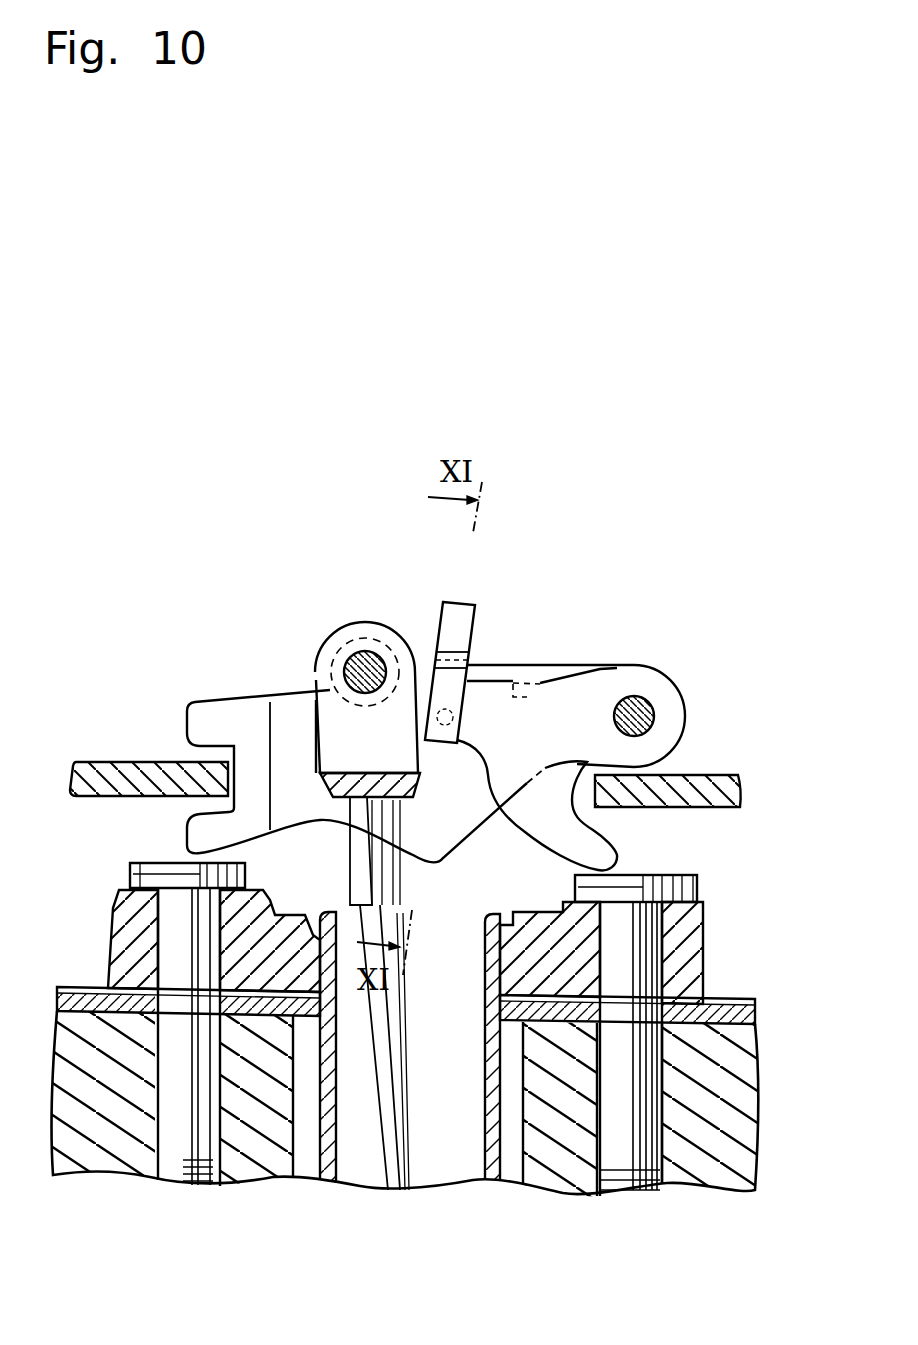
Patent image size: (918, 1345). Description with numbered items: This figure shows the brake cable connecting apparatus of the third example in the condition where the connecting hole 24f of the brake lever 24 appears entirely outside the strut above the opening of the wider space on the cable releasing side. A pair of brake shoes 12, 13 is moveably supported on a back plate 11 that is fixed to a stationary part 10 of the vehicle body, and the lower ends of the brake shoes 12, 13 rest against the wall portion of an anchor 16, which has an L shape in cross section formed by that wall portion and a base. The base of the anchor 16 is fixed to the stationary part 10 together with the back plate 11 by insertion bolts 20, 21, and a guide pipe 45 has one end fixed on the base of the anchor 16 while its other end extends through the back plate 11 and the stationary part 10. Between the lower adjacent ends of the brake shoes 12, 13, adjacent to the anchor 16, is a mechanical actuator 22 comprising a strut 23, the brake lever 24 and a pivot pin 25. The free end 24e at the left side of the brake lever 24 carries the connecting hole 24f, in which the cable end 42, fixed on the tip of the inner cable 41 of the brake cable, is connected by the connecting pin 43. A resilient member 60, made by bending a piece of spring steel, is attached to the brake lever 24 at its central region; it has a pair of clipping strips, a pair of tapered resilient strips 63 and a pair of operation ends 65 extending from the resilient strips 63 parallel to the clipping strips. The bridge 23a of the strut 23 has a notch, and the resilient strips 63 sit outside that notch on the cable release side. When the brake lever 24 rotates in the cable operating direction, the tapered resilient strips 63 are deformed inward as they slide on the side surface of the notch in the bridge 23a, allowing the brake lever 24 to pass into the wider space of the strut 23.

The stationary part 10 is at (737, 1113).
The back plate 11 is at (755, 1011).
The brake shoe 12 is at (118, 761).
The brake shoe 13 is at (738, 775).
The anchor 16 is at (721, 947).
The insertion bolt 20 is at (130, 870).
The insertion bolt 21 is at (697, 888).
The mechanical actuator 22 is at (315, 637).
The strut 23 is at (469, 851).
The bridge 23a is at (486, 664).
The brake lever 24 is at (595, 671).
The free end 24e is at (355, 655).
The connecting hole 24f is at (352, 665).
The pivot pin 25 is at (638, 702).
The inner cable 41 is at (400, 1186).
The cable end 42 is at (343, 747).
The connecting pin 43 is at (320, 672).
The guide pipe 45 is at (493, 1143).
The resilient member 60 is at (448, 627).
The resilient strip 63 is at (437, 668).
The operation end 65 is at (440, 652).